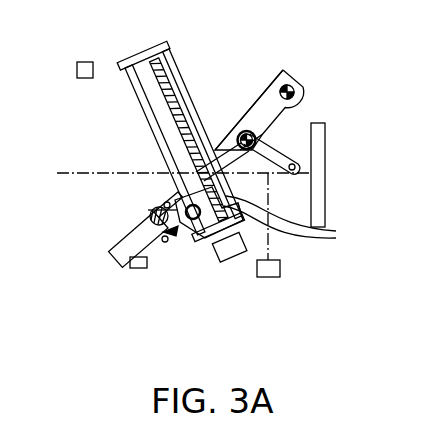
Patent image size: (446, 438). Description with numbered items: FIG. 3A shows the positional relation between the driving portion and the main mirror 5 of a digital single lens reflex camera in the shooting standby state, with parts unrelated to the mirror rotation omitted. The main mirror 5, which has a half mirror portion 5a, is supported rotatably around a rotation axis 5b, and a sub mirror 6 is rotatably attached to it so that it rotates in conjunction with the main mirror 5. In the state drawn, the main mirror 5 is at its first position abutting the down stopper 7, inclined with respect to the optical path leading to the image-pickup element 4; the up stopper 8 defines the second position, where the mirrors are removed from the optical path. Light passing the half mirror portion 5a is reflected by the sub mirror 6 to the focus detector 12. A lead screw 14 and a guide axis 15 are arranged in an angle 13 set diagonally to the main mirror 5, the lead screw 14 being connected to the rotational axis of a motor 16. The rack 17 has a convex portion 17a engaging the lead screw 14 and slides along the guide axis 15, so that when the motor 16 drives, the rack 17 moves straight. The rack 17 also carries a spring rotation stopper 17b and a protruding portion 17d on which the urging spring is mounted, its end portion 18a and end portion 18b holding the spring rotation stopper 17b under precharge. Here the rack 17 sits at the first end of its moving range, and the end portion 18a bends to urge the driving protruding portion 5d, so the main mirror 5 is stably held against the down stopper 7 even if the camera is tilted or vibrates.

The image-pickup element 4 is at (327, 180).
The main mirror 5 is at (103, 247).
The half mirror portion 5a is at (123, 232).
The rotation axis 5b is at (300, 78).
The driving protruding portion 5d is at (147, 214).
The sub mirror 6 is at (278, 152).
The down stopper 7 is at (137, 270).
The up stopper 8 is at (81, 61).
The focus detector 12 is at (265, 277).
The angle 13 is at (182, 74).
The lead screw 14 is at (186, 116).
The guide axis 15 is at (135, 98).
The motor 16 is at (233, 262).
The rack 17 is at (186, 246).
The convex portion 17a is at (336, 234).
The spring rotation stopper 17b is at (180, 242).
The protruding portion 17d is at (213, 243).
The end portion 18a is at (165, 208).
The end portion 18b is at (163, 238).